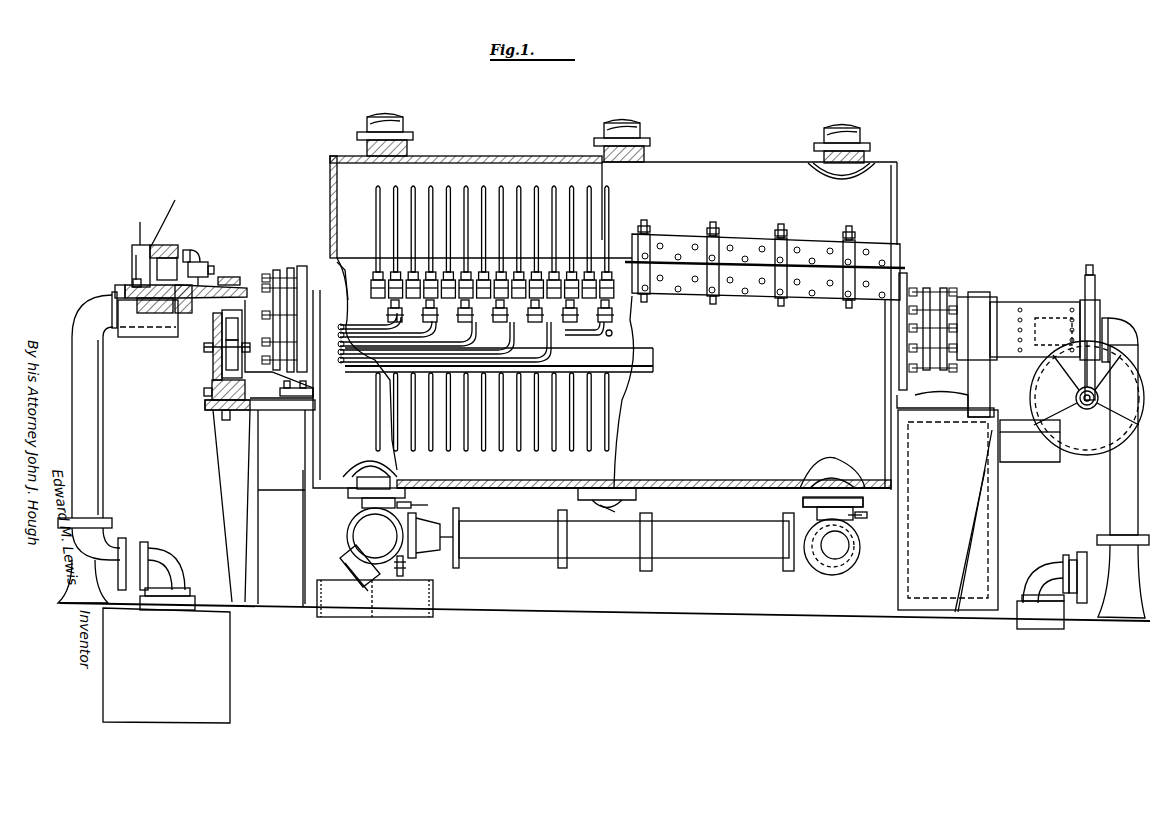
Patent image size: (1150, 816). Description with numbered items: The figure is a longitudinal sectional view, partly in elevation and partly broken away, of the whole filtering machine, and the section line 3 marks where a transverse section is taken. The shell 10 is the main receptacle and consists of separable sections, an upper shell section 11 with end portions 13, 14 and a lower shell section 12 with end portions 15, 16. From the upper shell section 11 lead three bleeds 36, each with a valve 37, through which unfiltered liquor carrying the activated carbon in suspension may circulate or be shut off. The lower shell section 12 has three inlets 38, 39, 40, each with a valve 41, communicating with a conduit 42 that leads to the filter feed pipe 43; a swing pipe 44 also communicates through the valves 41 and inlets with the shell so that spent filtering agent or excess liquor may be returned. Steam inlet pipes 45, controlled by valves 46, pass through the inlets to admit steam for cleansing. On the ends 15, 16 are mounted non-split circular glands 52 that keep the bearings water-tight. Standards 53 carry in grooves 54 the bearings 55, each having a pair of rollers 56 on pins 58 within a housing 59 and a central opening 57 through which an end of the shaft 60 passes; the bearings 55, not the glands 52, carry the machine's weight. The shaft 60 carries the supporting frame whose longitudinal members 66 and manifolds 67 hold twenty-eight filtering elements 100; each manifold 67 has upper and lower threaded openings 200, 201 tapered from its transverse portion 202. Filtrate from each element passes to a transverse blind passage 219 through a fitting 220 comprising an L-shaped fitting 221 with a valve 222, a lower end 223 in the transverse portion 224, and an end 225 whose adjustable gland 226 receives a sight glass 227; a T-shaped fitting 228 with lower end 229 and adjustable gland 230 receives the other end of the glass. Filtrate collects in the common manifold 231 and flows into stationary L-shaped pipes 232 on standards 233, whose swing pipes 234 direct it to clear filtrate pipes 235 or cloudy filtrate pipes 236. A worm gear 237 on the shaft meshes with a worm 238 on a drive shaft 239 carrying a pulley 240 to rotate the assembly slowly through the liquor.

The section line 3- 3 is at (622, 66).
The shell 10 is at (897, 192).
The upper shell section 11 is at (749, 201).
The lower shell section 12 is at (644, 392).
The end portion 13 is at (331, 190).
The end portion 14 is at (897, 226).
The end portion 15 is at (322, 440).
The end portion 16 is at (885, 438).
The bleed 36 is at (405, 150).
The valve 37 is at (392, 135).
The inlet 38 is at (392, 468).
The inlet 39 is at (614, 470).
The inlet 40 is at (815, 470).
The valve 41 is at (426, 505).
The conduit 42 is at (626, 540).
The filter feed pipe 43 is at (840, 555).
The swing pipe 44 is at (372, 539).
The steam inlet pipe 45 is at (430, 560).
The valve 46 is at (404, 568).
The non-split circular gland 52 is at (288, 372).
The standard 53 is at (330, 540).
The groove 54 is at (212, 410).
The bearing 55 is at (213, 345).
The roller bearing 56 is at (204, 350).
The central opening 57 is at (222, 420).
The pin 58 is at (222, 368).
The housing 59 is at (212, 392).
The shaft 60 is at (1050, 292).
The longitudinal member 66 is at (636, 360).
The manifold 67 is at (368, 290).
The filtering element 100 is at (380, 196).
The upper threaded opening 200 is at (476, 331).
The lower threaded opening 201 is at (384, 317).
The transverse portion 202 is at (445, 333).
The blind passage 219 is at (132, 285).
The fitting 220 is at (140, 244).
The L-shaped fitting 221 is at (212, 270).
The valve 222 is at (214, 272).
The lower end 223 is at (181, 299).
The transverse portion 224 is at (190, 313).
The end 225 is at (190, 248).
The adjustable gland 226 is at (202, 260).
The sight glass 227 is at (170, 245).
The T-shaped fitting 228 is at (141, 223).
The lower end 229 is at (135, 262).
The adjustable gland 230 is at (174, 215).
The manifold 231 is at (108, 301).
The L-shaped pipe 232 is at (88, 422).
The standard 233 is at (85, 578).
The swing pipe 234 is at (170, 565).
The clear filtrate pipe 235 is at (190, 602).
The cloudy filtrate pipe 236 is at (166, 665).
The worm gear 237 is at (1085, 268).
The worm 238 is at (1078, 398).
The drive shaft 239 is at (1045, 425).
The pulley 240 is at (1068, 457).